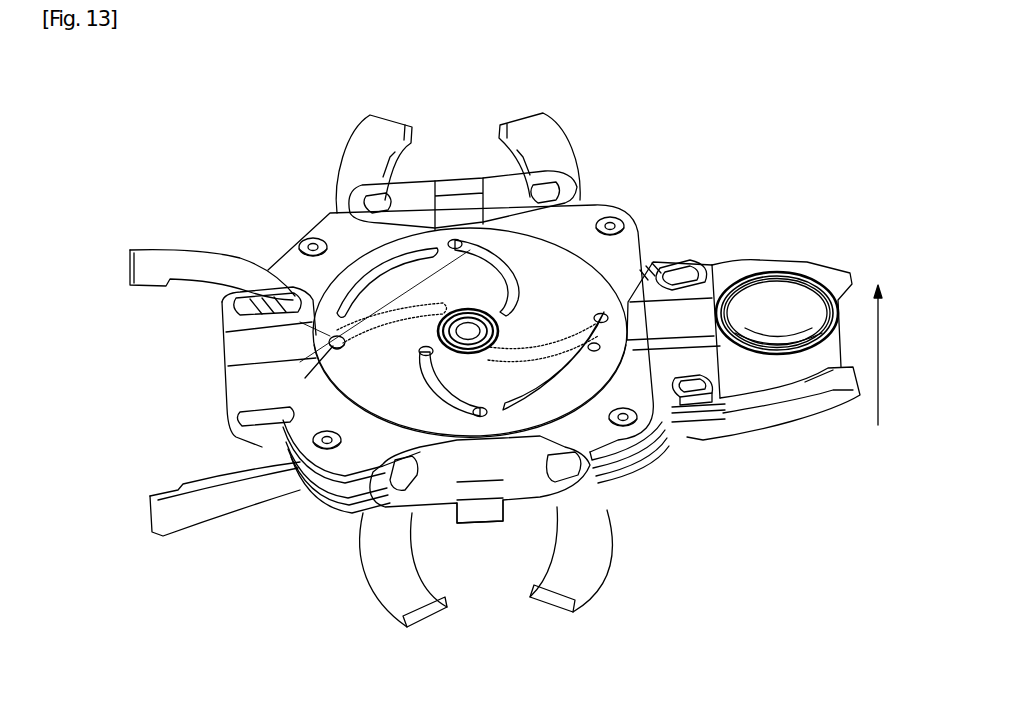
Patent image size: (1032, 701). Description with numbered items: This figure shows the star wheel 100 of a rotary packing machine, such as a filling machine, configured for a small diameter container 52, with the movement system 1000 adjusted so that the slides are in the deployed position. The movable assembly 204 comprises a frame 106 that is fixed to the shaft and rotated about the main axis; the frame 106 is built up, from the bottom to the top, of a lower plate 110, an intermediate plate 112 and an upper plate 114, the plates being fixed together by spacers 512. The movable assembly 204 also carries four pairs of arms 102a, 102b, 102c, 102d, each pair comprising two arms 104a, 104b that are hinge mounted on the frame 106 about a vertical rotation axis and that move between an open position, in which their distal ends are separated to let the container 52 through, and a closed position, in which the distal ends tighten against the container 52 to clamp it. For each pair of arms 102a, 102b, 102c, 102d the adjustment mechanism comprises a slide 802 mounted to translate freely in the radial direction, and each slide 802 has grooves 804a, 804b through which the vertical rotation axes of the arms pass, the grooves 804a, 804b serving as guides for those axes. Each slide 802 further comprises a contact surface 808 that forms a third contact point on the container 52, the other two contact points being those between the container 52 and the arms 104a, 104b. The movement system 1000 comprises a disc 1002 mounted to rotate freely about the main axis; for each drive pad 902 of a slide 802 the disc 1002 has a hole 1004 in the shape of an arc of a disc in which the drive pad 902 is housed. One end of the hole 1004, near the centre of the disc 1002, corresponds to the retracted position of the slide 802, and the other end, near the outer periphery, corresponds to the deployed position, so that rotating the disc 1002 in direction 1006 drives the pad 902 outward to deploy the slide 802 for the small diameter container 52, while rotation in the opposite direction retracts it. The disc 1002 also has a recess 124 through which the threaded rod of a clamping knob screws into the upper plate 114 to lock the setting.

The star wheel 100 is at (802, 210).
The movement system 1000 is at (298, 188).
The movable assembly 204 is at (238, 191).
The upper plate 114 is at (303, 268).
The disc 1002 is at (525, 388).
The direction of rotation 1006 is at (395, 298).
The drive pad 902 is at (318, 379).
The pair of arms 102c is at (467, 152).
The pair of arms 102a is at (520, 576).
The contact surface 808 is at (488, 510).
The arm 104a is at (412, 606).
The arm 104b is at (588, 582).
The pair of arms 102d is at (150, 360).
The frame 106 is at (183, 218).
The slide 802 is at (233, 398).
The hole 1004 is at (320, 300).
The pair of arms 102b is at (804, 453).
The small diameter container 52 is at (793, 317).
The groove 804b is at (698, 272).
The groove 804a is at (702, 394).
The lower plate 110 is at (315, 490).
The intermediate plate 112 is at (352, 482).
The recess 124 is at (540, 403).
The spacer 512 is at (640, 445).